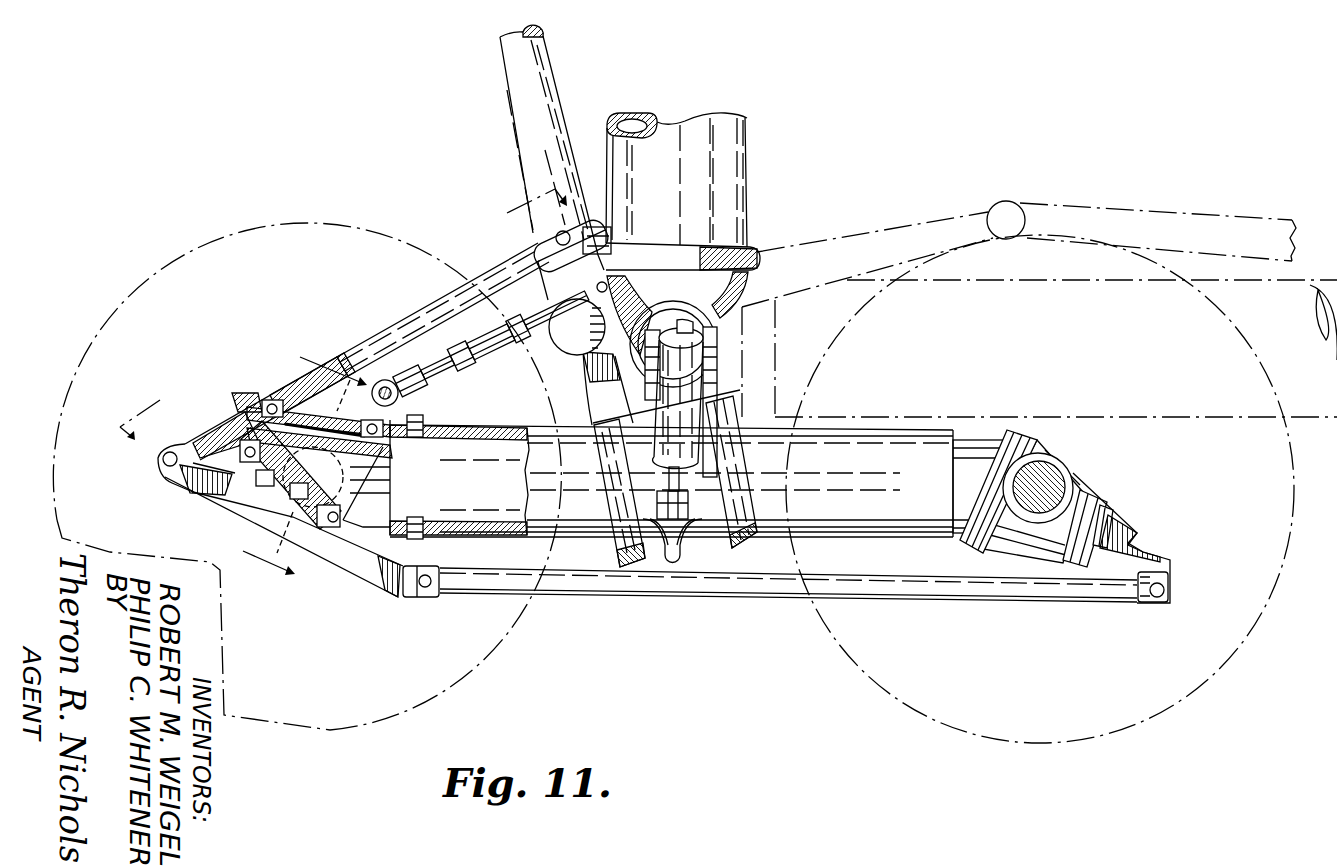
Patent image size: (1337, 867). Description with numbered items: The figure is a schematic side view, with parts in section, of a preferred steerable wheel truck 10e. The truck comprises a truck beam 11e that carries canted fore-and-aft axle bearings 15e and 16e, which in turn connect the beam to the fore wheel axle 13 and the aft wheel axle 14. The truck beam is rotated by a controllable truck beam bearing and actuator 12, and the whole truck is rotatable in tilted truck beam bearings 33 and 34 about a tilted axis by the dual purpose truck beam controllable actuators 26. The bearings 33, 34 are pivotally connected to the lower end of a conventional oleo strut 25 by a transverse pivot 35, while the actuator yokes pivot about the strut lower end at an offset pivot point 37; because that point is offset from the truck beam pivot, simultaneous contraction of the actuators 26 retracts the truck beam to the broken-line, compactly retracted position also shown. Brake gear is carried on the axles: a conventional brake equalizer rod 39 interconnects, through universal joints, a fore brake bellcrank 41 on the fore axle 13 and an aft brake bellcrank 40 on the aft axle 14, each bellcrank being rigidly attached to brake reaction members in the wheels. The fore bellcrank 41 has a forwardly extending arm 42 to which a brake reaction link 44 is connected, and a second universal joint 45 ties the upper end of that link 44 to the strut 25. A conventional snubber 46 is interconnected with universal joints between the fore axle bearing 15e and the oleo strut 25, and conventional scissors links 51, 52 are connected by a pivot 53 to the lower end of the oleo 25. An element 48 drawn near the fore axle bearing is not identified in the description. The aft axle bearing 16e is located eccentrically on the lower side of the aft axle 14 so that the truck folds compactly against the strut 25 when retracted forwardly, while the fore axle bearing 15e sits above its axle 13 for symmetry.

The truck 10e is at (791, 206).
The truck beam 11e is at (906, 489).
The truck beam bearing and actuator 12 is at (325, 304).
The fore wheel axle 13 is at (288, 457).
The aft wheel axle 14 is at (1053, 477).
The fore axle bearing 15e is at (303, 380).
The aft axle bearing 16e is at (1040, 545).
The oleo strut 25 is at (695, 175).
The truck beam controllable actuators 26 is at (652, 404).
The truck beam bearing 33 is at (618, 545).
The truck beam bearing 34 is at (744, 538).
The transverse pivot 35 is at (622, 350).
The offset pivot point 37 is at (716, 295).
The brake equalizer rod 39 is at (752, 585).
The aft brake bellcrank 40 is at (1140, 530).
The fore brake bellcrank 41 is at (383, 530).
The forwardly extending arm 42 is at (262, 495).
The brake reaction link 44 is at (452, 298).
The second universal joint 45 is at (553, 242).
The snubber 46 is at (500, 358).
The bearing shaft 48 is at (292, 530).
The scissors link 51 is at (530, 113).
The scissors link 52 is at (1243, 246).
The pivot 53 is at (577, 327).